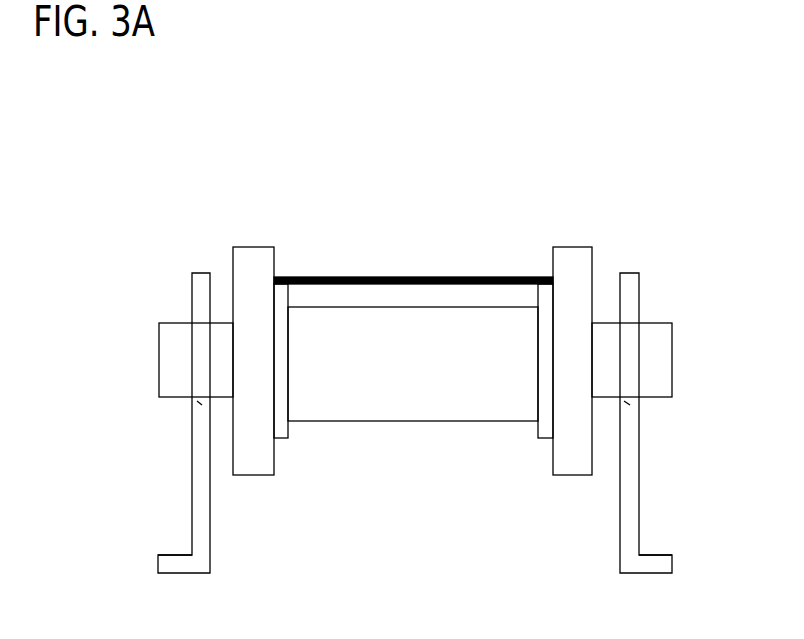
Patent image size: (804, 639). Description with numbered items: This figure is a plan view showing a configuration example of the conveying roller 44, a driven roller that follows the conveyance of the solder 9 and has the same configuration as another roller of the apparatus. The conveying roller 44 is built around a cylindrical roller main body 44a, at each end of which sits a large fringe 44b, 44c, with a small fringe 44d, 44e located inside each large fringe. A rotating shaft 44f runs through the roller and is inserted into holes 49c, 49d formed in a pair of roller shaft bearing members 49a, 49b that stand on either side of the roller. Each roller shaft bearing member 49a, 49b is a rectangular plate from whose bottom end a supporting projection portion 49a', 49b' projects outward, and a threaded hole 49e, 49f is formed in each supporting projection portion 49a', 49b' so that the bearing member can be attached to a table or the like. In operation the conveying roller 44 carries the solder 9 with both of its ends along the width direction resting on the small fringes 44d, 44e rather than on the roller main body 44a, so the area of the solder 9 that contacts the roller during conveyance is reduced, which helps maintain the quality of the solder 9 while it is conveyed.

The conveying roller 44 is at (182, 226).
The solder 9 is at (468, 277).
The roller main body 44a is at (427, 421).
The large fringe 44b is at (252, 476).
The large fringe 44c is at (572, 476).
The small fringe 44d is at (286, 438).
The small fringe 44e is at (540, 438).
The rotating shaft 44f is at (640, 400).
The roller shaft bearing member 49a is at (208, 434).
The supporting projection portion 49a' is at (203, 591).
The roller shaft bearing member 49b is at (624, 435).
The supporting projection portion 49b' is at (630, 593).
The hole 49c is at (193, 402).
The hole 49d is at (639, 400).
The threaded hole 49e is at (178, 551).
The threaded hole 49f is at (695, 538).